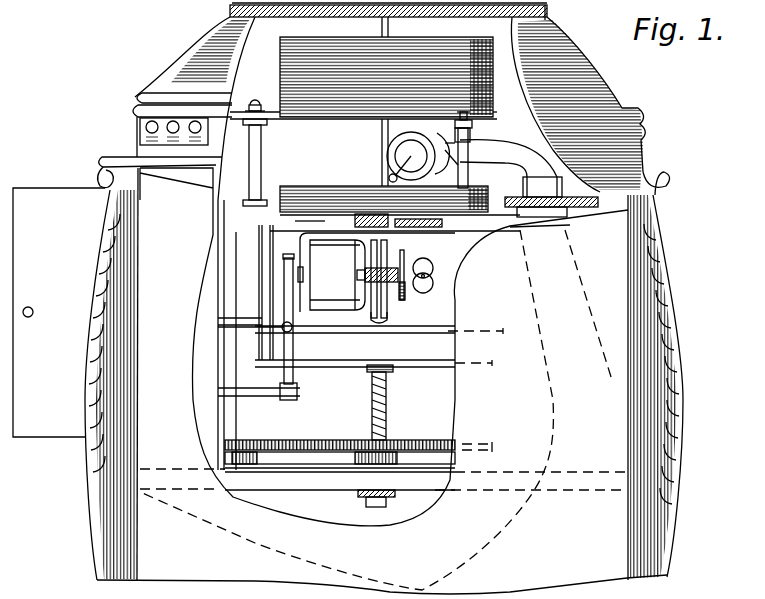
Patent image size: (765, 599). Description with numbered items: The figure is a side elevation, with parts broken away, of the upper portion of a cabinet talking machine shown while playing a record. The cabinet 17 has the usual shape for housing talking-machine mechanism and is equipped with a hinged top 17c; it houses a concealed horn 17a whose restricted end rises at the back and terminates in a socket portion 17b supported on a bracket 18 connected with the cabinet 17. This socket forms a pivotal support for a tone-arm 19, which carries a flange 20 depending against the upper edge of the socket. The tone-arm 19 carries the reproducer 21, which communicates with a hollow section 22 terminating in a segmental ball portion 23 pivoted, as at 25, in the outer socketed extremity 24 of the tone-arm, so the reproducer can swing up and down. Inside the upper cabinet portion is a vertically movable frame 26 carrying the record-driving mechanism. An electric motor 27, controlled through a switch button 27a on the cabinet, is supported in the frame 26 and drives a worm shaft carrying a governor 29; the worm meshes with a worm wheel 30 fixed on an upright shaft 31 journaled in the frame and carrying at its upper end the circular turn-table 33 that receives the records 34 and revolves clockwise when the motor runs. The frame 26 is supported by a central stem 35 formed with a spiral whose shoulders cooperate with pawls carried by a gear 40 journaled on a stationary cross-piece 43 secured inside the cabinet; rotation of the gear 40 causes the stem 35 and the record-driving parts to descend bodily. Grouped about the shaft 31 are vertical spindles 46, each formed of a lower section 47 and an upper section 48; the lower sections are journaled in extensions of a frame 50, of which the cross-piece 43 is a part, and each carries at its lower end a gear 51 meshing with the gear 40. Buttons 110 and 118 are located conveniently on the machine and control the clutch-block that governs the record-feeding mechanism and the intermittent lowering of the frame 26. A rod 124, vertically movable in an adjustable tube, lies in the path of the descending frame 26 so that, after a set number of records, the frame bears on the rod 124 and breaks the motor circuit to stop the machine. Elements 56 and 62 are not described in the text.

The cabinet 17 is at (643, 297).
The concealed horn 17a is at (607, 400).
The socket portion 17b is at (676, 203).
The hinged top 17c is at (197, 43).
The bracket 18 is at (580, 215).
The tone-arm 19 is at (535, 195).
The flange 20 is at (560, 205).
The reproducer 21 is at (411, 146).
The hollow section 22 is at (437, 152).
The segmental ball portion 23 is at (455, 143).
The outer socketed extremity 24 is at (475, 112).
The pivot 25 is at (452, 158).
The vertically movable frame 26 is at (413, 467).
The electric motor 27 is at (337, 275).
The switch button 27a is at (140, 126).
The governor 29 is at (425, 294).
The worm wheel 30 is at (393, 297).
The upright shaft 31 is at (380, 255).
The turn-table 33 is at (333, 212).
The records 34 is at (445, 53).
The stem 35 is at (386, 412).
The gear 40 is at (322, 440).
The stationary cross-piece 43 is at (338, 483).
The spindles 46 is at (248, 250).
The lower spindle section 47 is at (258, 240).
The upper spindle section 48 is at (253, 150).
The frame 50 is at (302, 478).
The gear 51 is at (233, 440).
The cap nut 56 is at (262, 107).
The stem 62 is at (382, 133).
The button 110 is at (197, 120).
The button 118 is at (172, 121).
The rod 124 is at (295, 248).